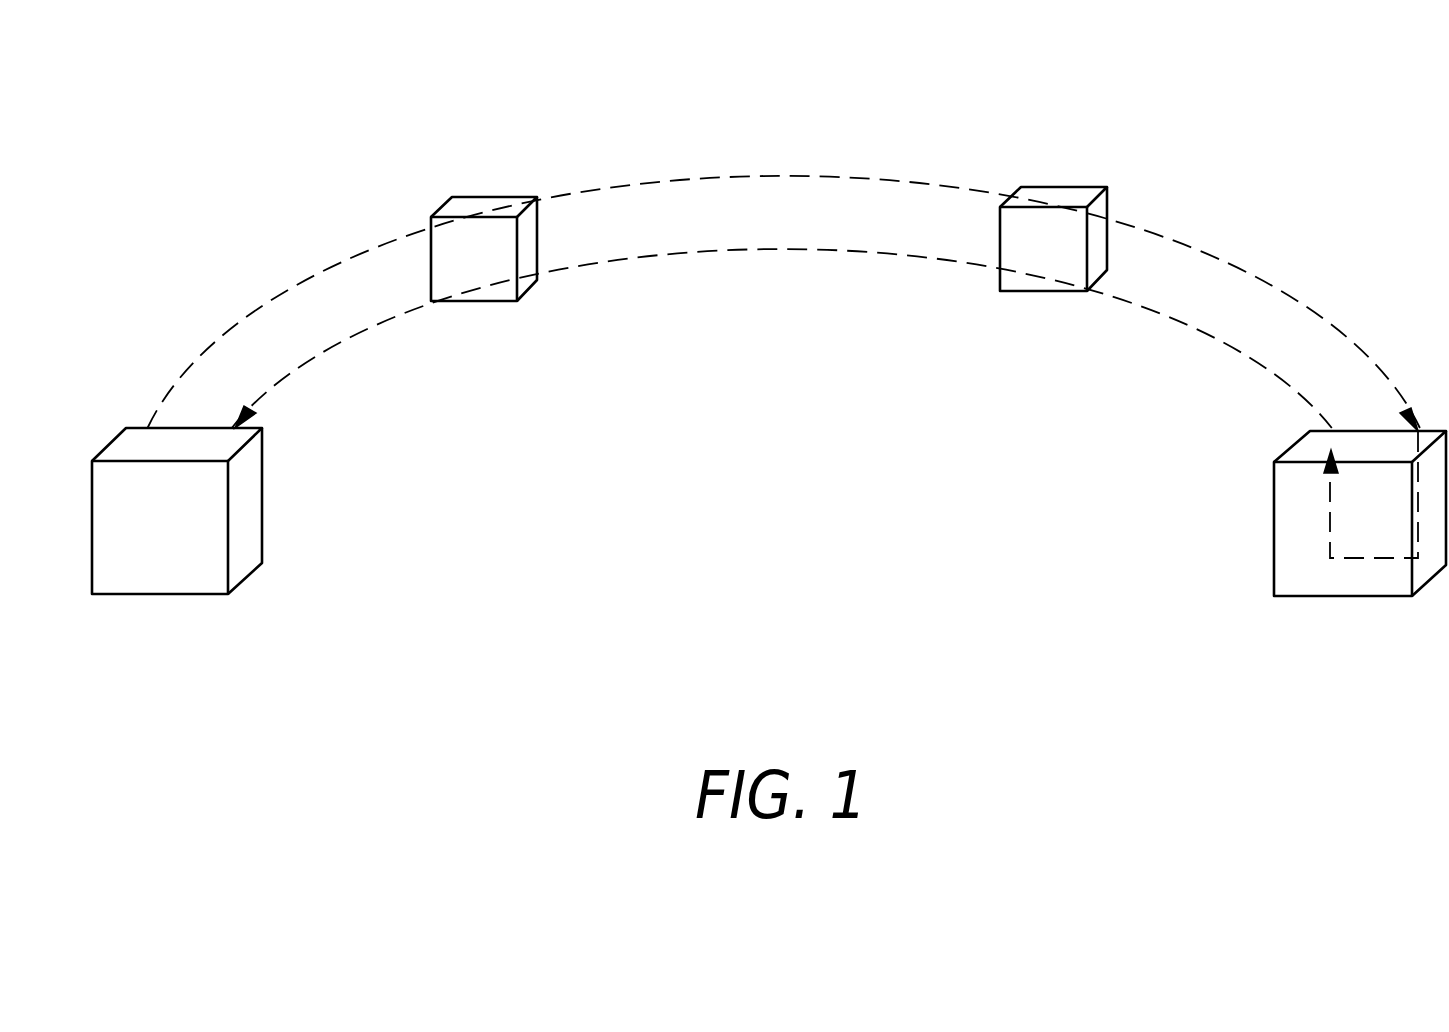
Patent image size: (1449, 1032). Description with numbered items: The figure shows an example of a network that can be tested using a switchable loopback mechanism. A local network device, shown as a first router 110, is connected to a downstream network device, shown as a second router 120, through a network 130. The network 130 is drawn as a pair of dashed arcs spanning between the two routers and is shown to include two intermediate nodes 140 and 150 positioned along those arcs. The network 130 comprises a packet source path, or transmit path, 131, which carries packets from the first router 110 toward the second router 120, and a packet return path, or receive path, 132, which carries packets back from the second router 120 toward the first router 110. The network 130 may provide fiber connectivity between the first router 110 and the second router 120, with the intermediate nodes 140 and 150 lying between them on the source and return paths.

The first router 110 is at (147, 584).
The second router 120 is at (1329, 585).
The network 130 is at (826, 108).
The packet source path 131 is at (766, 303).
The packet return path 132 is at (825, 403).
The intermediate node 140 is at (475, 302).
The intermediate node 150 is at (1043, 292).